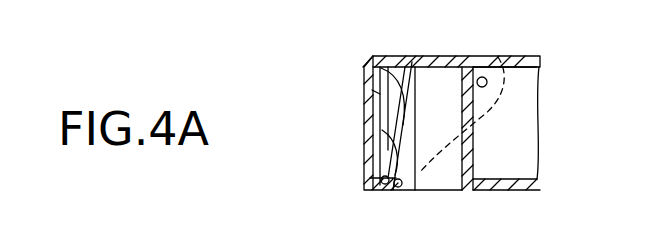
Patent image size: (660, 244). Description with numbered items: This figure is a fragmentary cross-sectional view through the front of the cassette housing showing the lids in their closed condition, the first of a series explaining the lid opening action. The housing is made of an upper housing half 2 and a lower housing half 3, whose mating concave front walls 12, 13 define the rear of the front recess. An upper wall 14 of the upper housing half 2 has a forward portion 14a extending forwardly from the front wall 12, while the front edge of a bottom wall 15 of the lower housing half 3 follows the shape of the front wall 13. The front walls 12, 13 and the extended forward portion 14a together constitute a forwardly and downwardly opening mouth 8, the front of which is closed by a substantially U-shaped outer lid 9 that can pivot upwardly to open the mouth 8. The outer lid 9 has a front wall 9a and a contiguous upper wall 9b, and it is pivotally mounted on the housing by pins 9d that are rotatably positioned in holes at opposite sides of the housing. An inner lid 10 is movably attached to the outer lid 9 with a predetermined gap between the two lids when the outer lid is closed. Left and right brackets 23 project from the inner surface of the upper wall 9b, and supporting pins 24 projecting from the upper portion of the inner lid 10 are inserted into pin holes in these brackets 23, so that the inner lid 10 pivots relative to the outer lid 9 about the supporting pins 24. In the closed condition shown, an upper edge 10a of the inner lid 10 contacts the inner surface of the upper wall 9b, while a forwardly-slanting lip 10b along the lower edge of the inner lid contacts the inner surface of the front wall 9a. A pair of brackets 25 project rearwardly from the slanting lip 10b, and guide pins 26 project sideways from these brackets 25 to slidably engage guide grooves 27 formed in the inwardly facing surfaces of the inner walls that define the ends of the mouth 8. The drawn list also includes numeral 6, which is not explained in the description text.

The upper housing half 2 is at (508, 56).
The lower housing half 3 is at (505, 190).
The seal body 6 is at (362, 135).
The mouth 8 is at (454, 189).
The outer lid 9 is at (357, 108).
The front wall 9a is at (362, 152).
The upper wall 9b is at (394, 67).
The pins 9d is at (488, 82).
The inner lid 10 is at (362, 117).
The upper edge 10a is at (410, 60).
The forwardly-slanting lip 10b is at (362, 178).
The front wall 12 is at (476, 104).
The front wall 13 is at (473, 150).
The upper wall 14 is at (532, 56).
The forward portion 14a is at (455, 56).
The bottom wall 15 is at (532, 185).
The brackets 23 is at (380, 88).
The supporting pins 24 is at (372, 92).
The brackets 25 is at (378, 186).
The guide pins 26 is at (394, 189).
The guide grooves 27 is at (413, 149).